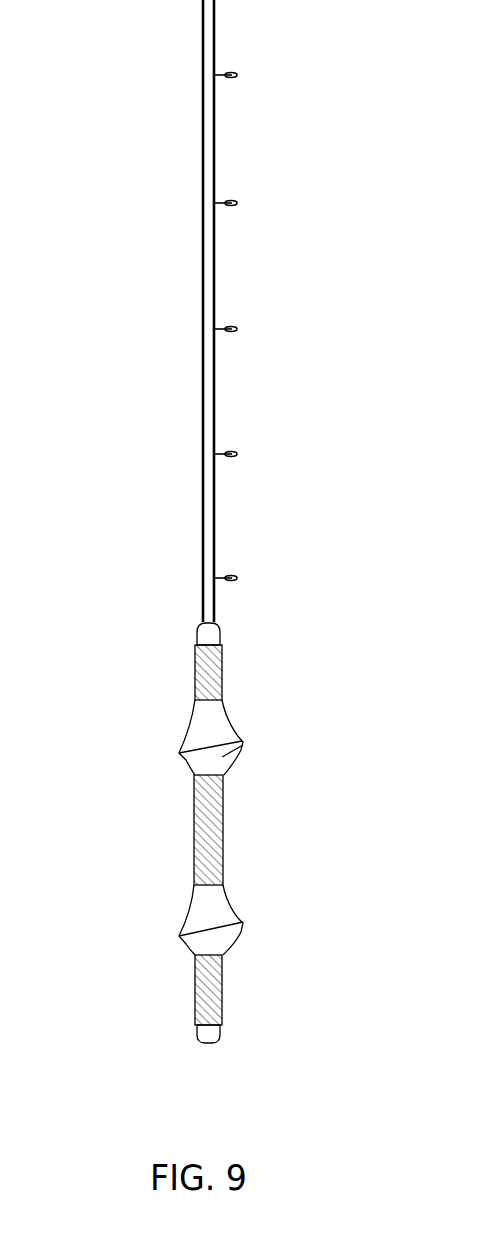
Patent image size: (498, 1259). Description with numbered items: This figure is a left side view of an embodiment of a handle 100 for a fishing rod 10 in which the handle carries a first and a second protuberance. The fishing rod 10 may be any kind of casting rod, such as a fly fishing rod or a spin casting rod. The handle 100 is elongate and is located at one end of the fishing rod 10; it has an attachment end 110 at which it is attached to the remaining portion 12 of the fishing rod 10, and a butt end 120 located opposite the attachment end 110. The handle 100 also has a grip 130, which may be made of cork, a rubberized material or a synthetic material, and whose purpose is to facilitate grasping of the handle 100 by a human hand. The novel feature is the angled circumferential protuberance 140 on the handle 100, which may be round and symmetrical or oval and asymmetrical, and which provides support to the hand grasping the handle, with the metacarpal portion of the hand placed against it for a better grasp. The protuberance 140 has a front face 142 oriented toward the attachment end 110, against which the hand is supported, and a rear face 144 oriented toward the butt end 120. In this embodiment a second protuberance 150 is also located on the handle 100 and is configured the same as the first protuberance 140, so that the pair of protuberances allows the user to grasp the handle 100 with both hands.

The fishing rod 10 is at (197, 518).
The remaining portion 12 is at (202, 386).
The handle 100 is at (186, 672).
The attachment end 110 is at (218, 624).
The butt end 120 is at (210, 1042).
The grip 130 is at (222, 670).
The angled circumferential protuberance 140 is at (230, 726).
The front face 142 is at (185, 742).
The rear face 144 is at (233, 756).
The second protuberance 150 is at (185, 925).